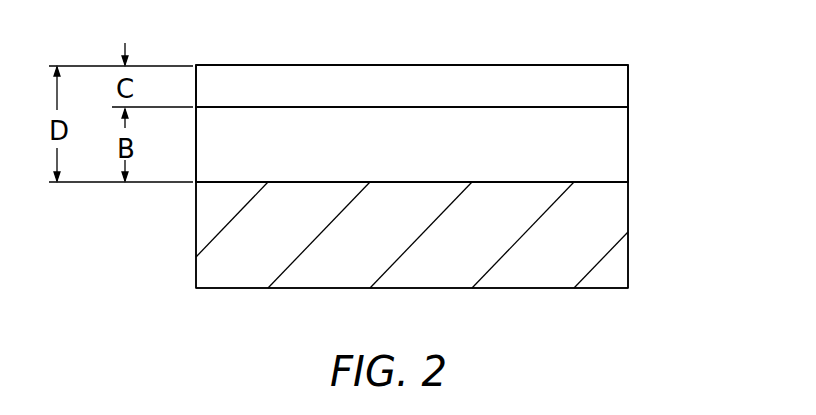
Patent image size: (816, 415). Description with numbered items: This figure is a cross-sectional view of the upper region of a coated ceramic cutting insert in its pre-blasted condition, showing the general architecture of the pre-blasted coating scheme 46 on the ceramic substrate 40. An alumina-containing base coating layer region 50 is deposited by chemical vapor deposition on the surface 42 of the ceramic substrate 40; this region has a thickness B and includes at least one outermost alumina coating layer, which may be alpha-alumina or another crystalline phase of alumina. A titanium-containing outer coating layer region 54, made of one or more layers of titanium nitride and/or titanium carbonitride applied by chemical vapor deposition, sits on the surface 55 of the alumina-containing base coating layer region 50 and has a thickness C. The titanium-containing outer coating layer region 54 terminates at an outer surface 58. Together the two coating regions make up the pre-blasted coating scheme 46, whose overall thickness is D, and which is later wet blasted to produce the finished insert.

The ceramic substrate 40 is at (568, 278).
The surface of the ceramic substrate 42 is at (587, 178).
The pre-blasted coating scheme 46 is at (712, 63).
The alumina-containing base coating layer region 50 is at (646, 107).
The titanium-containing outer coating layer region 54 is at (646, 65).
The surface of the alumina base coating layer region 55 is at (308, 105).
The outer surface 58 is at (505, 65).